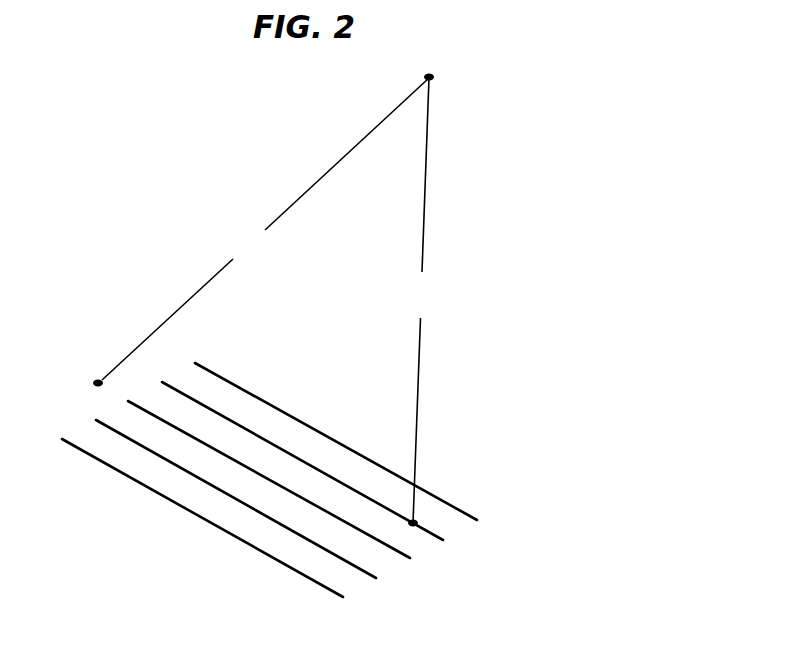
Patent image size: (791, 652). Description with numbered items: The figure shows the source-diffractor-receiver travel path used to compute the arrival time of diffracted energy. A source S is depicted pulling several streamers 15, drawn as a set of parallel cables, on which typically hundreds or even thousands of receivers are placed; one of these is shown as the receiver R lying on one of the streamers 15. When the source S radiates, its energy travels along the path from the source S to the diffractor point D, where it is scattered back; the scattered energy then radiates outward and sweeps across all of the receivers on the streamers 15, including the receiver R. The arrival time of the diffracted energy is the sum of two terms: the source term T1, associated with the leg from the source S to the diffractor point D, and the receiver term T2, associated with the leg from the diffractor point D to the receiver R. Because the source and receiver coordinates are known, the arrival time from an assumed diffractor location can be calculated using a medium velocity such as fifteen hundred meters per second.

The streamers 15 is at (150, 513).
The source S is at (94, 370).
The diffractor point D is at (443, 80).
The receiver R is at (425, 517).
The source term T1 is at (265, 229).
The receiver term T2 is at (418, 300).